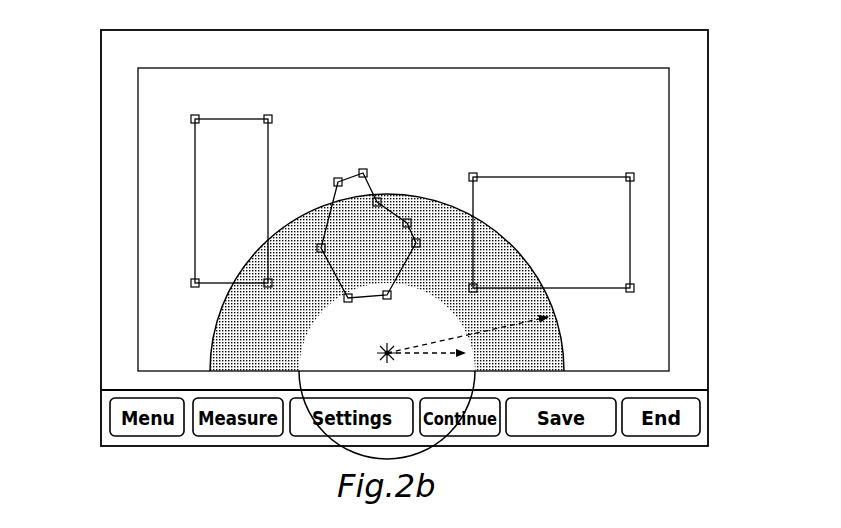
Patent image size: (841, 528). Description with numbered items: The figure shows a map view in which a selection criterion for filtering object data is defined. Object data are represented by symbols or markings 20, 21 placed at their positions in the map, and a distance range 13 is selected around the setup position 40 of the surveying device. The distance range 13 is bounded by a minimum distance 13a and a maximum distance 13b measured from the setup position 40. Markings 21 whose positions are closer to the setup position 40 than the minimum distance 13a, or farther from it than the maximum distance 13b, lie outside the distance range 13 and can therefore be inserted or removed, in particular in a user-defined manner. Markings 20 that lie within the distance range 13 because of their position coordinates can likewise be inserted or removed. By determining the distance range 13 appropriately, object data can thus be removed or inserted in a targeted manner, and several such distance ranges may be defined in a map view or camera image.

The distance range 13 is at (432, 210).
The minimum distance 13a is at (468, 353).
The maximum distance 13b is at (552, 318).
The markings of object data within the distance range 20 is at (266, 285).
The markings of object data outside the distance range 21 is at (193, 118).
The setup position of the surveying device 40 is at (382, 350).